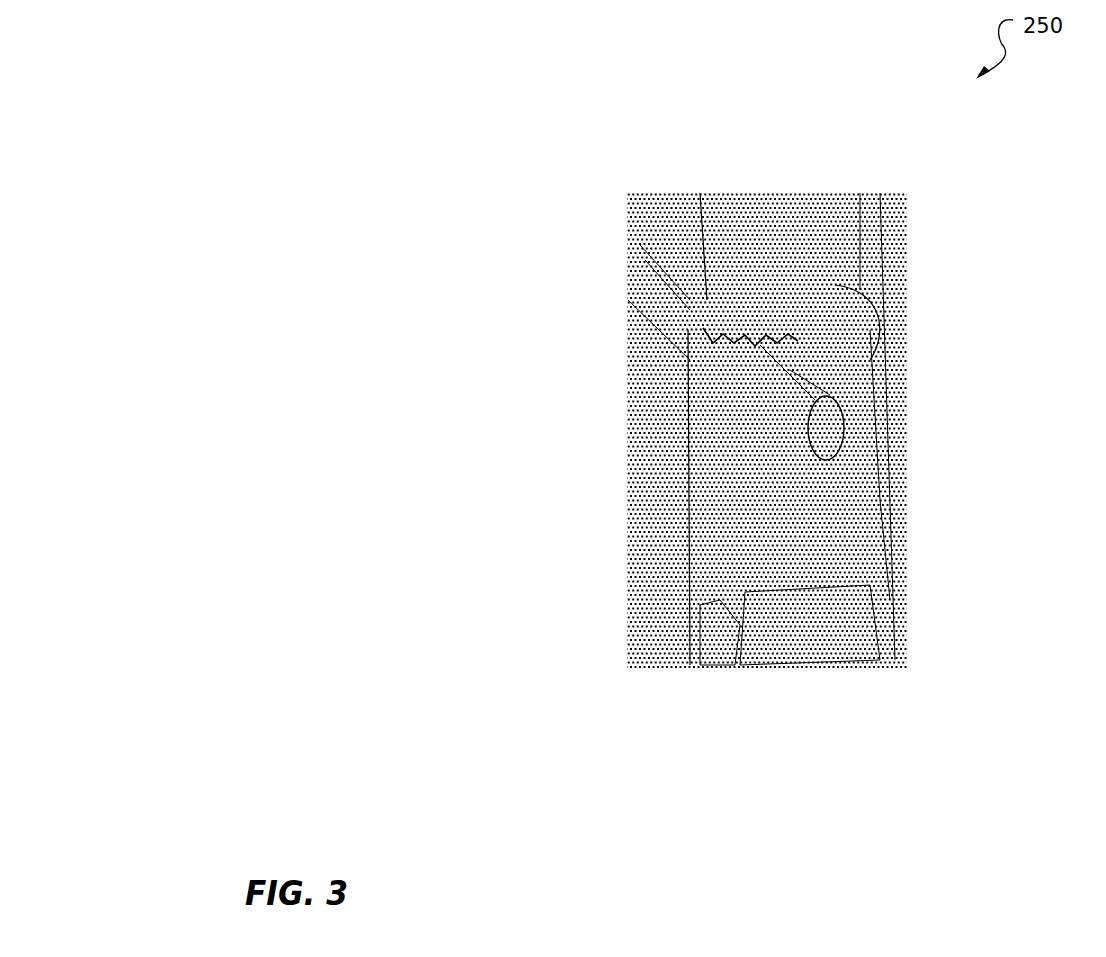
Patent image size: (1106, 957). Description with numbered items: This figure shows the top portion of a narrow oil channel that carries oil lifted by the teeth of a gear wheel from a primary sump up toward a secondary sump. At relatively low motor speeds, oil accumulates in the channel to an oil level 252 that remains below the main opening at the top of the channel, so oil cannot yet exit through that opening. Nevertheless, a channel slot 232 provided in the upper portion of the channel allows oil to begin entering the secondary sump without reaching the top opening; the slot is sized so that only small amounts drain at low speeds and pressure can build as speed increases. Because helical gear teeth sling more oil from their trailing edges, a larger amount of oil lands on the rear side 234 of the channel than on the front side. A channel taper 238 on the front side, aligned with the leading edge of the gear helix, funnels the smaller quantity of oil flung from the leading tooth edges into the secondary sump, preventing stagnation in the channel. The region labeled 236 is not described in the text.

The oil level 252 is at (780, 326).
The channel slot 232 is at (820, 437).
The channel taper 238 is at (863, 473).
The rear side of the channel 234 is at (712, 657).
The housing block 236 is at (825, 598).